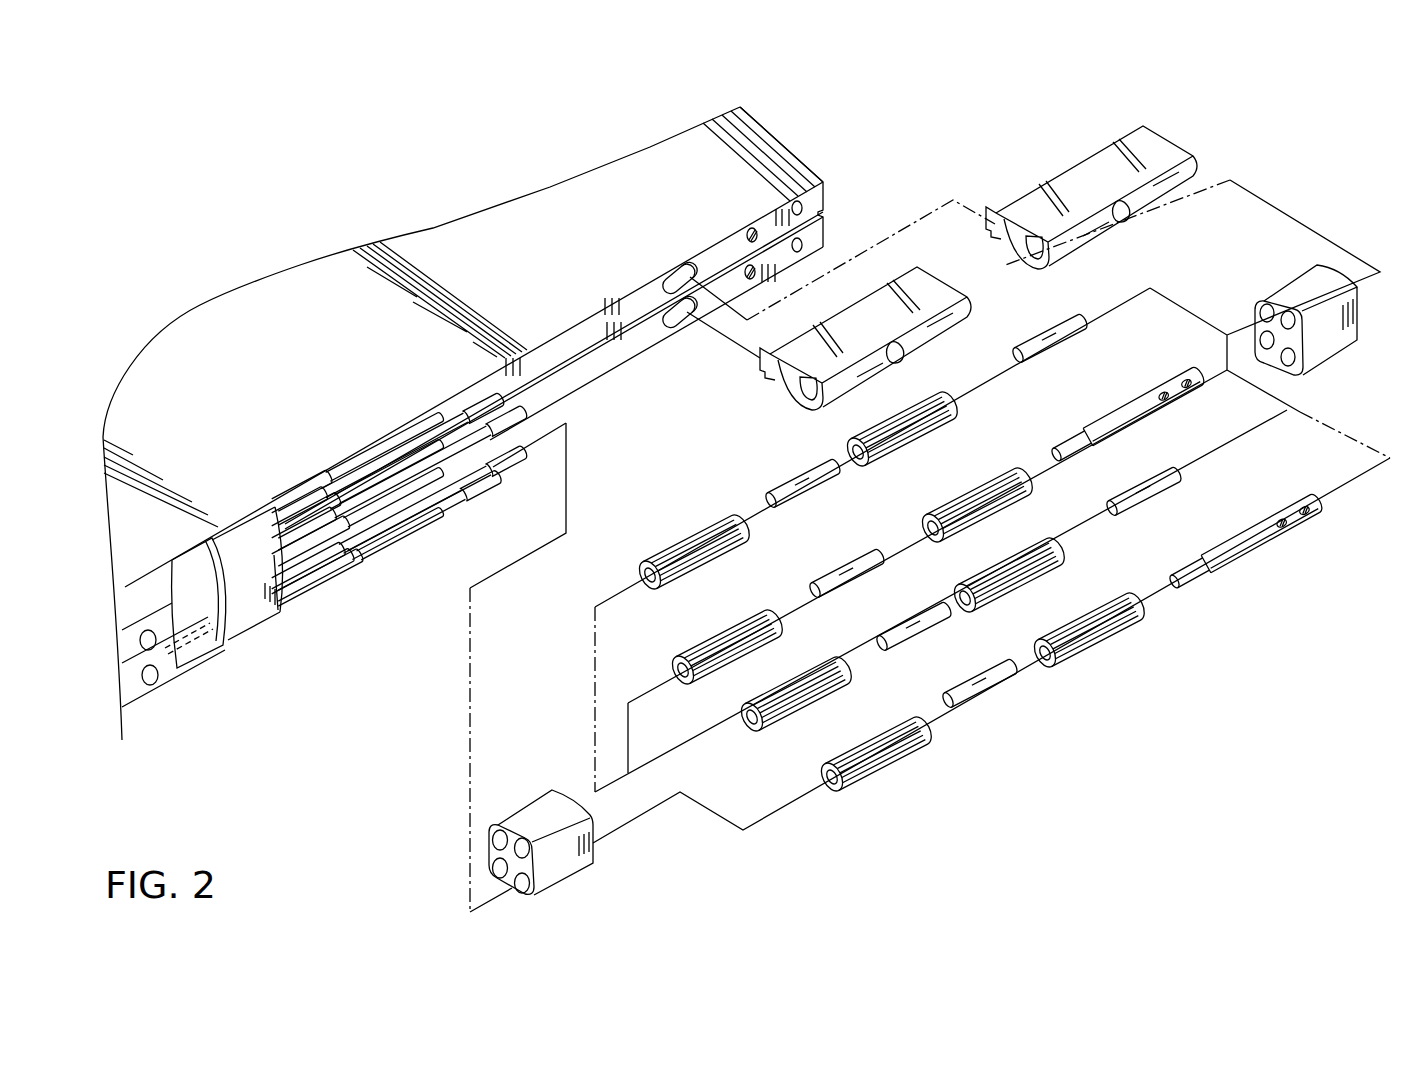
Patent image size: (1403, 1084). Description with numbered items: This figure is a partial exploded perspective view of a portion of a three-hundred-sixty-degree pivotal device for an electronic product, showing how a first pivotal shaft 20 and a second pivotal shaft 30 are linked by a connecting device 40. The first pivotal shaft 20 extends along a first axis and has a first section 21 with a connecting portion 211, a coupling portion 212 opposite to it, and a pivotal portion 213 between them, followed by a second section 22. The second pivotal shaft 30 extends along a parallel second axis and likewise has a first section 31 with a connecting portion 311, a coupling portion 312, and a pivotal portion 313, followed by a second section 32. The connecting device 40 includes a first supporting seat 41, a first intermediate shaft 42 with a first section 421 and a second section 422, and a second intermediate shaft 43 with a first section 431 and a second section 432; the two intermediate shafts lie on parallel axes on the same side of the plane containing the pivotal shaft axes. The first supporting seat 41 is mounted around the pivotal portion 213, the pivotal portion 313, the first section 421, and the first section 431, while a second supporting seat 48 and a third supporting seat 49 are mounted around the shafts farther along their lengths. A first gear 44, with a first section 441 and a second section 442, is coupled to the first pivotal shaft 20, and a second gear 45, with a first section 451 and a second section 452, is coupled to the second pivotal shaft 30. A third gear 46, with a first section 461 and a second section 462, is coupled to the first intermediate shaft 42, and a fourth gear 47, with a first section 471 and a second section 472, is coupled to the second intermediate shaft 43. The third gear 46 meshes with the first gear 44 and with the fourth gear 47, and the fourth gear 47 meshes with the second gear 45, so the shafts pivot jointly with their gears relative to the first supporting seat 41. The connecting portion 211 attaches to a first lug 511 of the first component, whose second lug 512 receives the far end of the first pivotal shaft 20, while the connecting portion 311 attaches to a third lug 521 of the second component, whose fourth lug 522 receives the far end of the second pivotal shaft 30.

The first pivotal shaft 20 is at (1160, 394).
The first section 21 is at (1135, 394).
The connecting portion 211 is at (1185, 392).
The coupling portion 212 is at (1070, 446).
The pivotal portion 213 is at (1144, 405).
The second section 22 is at (849, 590).
The second pivotal shaft 30 is at (1282, 574).
The first section 31 is at (1275, 574).
The connecting portion 311 is at (1301, 519).
The coupling portion 312 is at (1188, 573).
The pivotal portion 313 is at (1262, 532).
The second section 32 is at (989, 702).
The connecting device 40 is at (934, 548).
The first supporting seat 41 is at (1328, 350).
The first intermediate shaft 42 is at (956, 398).
The first section 421 is at (1035, 356).
The second section 422 is at (816, 493).
The second intermediate shaft 43 is at (1085, 577).
The first section 431 is at (1143, 498).
The second section 432 is at (909, 636).
The first gear 44 is at (901, 590).
The first section 441 is at (965, 505).
The second section 442 is at (706, 680).
The second gear 45 is at (1025, 708).
The first section 451 is at (1111, 640).
The second section 452 is at (882, 762).
The third gear 46 is at (850, 509).
The first section 461 is at (893, 462).
The second section 462 is at (687, 582).
The fourth gear 47 is at (958, 659).
The first section 471 is at (1006, 592).
The second section 472 is at (769, 712).
The second supporting seat 48 is at (566, 862).
The third supporting seat 49 is at (273, 612).
The first lug 511 is at (1075, 178).
The second lug 512 is at (200, 620).
The third lug 521 is at (793, 393).
The fourth lug 522 is at (168, 688).